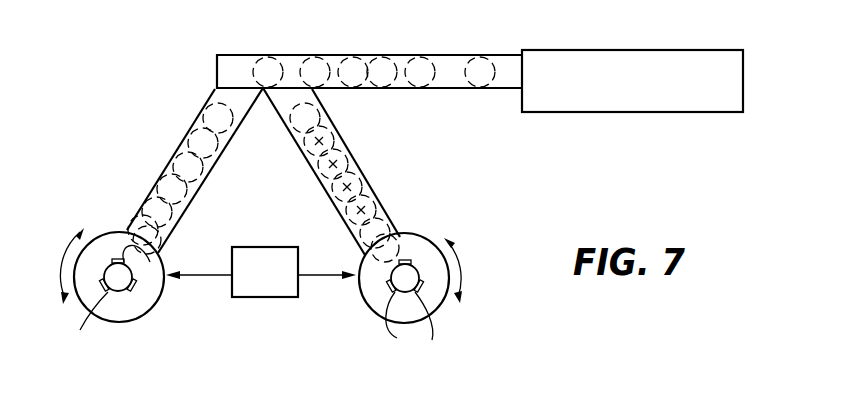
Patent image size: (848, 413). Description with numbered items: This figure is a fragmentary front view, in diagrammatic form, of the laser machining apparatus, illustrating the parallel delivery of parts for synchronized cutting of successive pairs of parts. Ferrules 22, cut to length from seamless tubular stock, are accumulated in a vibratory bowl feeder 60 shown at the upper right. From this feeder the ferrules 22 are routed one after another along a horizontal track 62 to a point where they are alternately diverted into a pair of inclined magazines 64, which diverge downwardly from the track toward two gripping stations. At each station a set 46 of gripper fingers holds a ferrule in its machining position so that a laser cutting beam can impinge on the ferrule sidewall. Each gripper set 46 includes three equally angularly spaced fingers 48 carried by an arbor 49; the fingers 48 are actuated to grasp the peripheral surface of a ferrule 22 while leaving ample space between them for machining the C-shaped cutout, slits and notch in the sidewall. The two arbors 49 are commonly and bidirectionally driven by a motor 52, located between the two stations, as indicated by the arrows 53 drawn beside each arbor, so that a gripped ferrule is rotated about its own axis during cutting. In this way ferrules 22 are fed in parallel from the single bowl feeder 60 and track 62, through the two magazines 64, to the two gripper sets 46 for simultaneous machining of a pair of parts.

The ferrule 22 is at (493, 58).
The gripper finger set 46 is at (118, 300).
The gripper finger 48 is at (418, 218).
The arbor 49 is at (104, 233).
The motor 52 is at (277, 298).
The arrows 53 is at (60, 270).
The vibratory bowl feeder 60 is at (633, 50).
The horizontal track 62 is at (384, 56).
The inclined magazine 64 is at (318, 178).